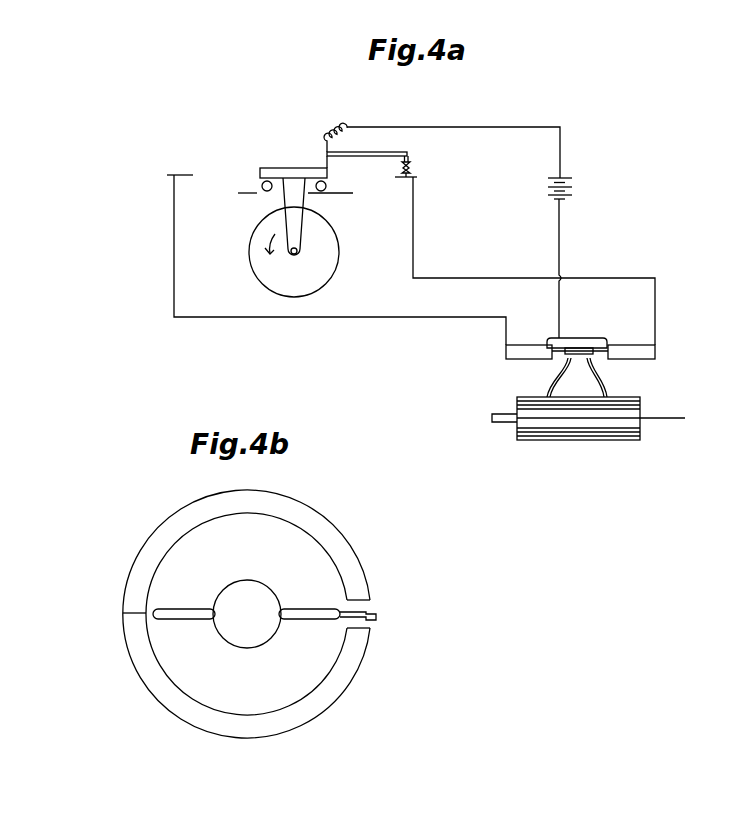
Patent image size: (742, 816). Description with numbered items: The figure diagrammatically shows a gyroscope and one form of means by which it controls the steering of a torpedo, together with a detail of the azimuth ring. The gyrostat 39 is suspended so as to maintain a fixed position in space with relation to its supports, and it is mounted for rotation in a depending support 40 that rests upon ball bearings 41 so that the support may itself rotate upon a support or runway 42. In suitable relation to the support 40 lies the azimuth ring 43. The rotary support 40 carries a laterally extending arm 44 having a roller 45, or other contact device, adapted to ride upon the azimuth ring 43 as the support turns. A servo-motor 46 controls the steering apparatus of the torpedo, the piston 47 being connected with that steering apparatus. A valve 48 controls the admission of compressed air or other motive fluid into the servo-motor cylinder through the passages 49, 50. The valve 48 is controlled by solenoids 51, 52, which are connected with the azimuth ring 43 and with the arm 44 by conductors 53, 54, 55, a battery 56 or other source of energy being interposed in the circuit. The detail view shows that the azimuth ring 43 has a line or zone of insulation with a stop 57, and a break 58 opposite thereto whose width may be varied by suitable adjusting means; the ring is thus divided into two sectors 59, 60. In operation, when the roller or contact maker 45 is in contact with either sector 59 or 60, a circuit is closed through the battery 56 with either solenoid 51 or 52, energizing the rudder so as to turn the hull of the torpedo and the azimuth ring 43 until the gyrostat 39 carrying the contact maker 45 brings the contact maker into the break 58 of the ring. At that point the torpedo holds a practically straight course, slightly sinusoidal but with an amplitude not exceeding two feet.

In FIG. 4A, the gyrostat 39 is at (340, 258).
In FIG. 4B, the gyrostat 39 is at (187, 608).
In FIG. 4A, the depending support 40 is at (297, 201).
In FIG. 4B, the depending support 40 is at (270, 631).
In FIG. 4A, the ball bearings 41 is at (262, 184).
In FIG. 4A, the support or runway 42 is at (255, 193).
In FIG. 4A, the azimuth ring 43 is at (184, 173).
In FIG. 4B, the azimuth ring 43 is at (171, 518).
In FIG. 4A, the laterally extending arm 44 is at (367, 156).
In FIG. 4B, the laterally extending arm 44 is at (345, 610).
In FIG. 4A, the roller 45 is at (411, 169).
In FIG. 4B, the roller 45 is at (368, 620).
In FIG. 4A, the servo-motor 46 is at (581, 442).
In FIG. 4A, the piston 47 is at (660, 420).
In FIG. 4A, the valve 48 is at (580, 348).
In FIG. 4A, the passage 49 is at (552, 378).
In FIG. 4A, the passage 50 is at (604, 378).
In FIG. 4A, the solenoid 51 is at (505, 352).
In FIG. 4A, the solenoid 52 is at (656, 352).
In FIG. 4A, the conductor 53 is at (340, 260).
In FIG. 4A, the conductor 54 is at (534, 261).
In FIG. 4A, the conductor 55 is at (453, 152).
In FIG. 4A, the battery 56 is at (573, 188).
In FIG. 4B, the stop 57 is at (123, 609).
In FIG. 4B, the break 58 is at (366, 606).
In FIG. 4B, the sector 59 is at (233, 723).
In FIG. 4B, the sector 60 is at (308, 498).